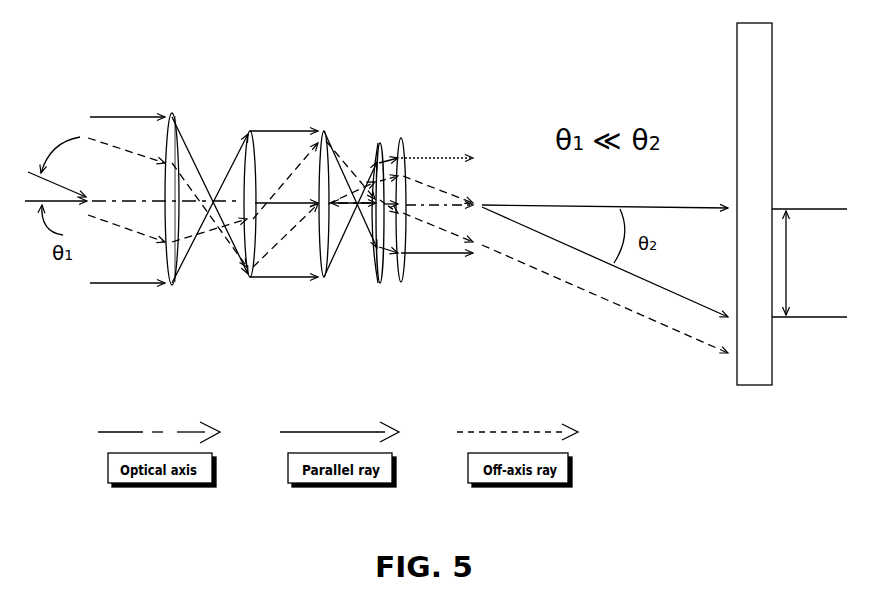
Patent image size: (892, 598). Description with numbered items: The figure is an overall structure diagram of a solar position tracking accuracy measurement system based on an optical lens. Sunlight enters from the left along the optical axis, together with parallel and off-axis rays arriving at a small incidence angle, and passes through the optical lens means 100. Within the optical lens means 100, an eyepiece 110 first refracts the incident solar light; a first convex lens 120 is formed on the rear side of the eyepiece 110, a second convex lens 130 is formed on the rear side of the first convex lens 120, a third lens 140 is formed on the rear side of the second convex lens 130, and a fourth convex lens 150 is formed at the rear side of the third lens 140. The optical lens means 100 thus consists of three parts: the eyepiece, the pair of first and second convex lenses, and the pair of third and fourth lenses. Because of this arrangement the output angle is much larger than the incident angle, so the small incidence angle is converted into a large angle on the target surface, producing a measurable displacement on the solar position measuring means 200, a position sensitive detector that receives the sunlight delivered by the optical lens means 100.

The optical lens means 100 is at (417, 292).
The eyepiece 110 is at (170, 108).
The first convex lens 120 is at (249, 129).
The second convex lens 130 is at (325, 129).
The third lens 140 is at (378, 141).
The fourth convex lens 150 is at (403, 137).
The solar position measuring means 200 is at (737, 82).